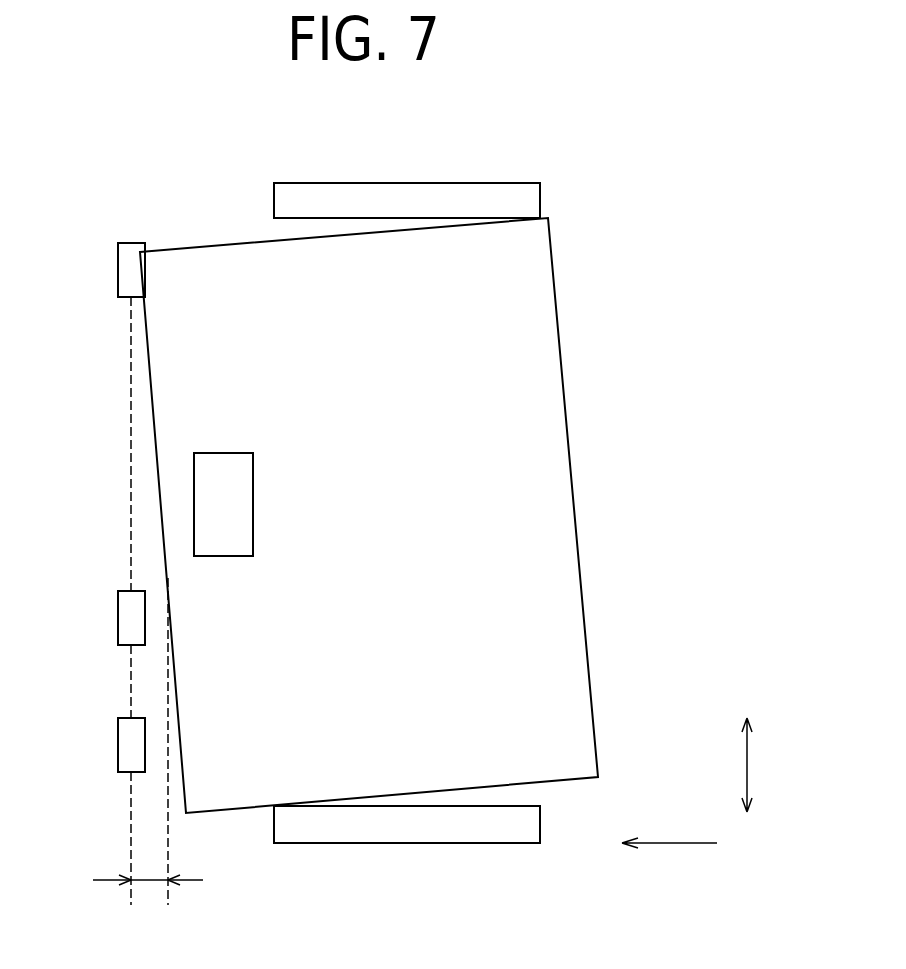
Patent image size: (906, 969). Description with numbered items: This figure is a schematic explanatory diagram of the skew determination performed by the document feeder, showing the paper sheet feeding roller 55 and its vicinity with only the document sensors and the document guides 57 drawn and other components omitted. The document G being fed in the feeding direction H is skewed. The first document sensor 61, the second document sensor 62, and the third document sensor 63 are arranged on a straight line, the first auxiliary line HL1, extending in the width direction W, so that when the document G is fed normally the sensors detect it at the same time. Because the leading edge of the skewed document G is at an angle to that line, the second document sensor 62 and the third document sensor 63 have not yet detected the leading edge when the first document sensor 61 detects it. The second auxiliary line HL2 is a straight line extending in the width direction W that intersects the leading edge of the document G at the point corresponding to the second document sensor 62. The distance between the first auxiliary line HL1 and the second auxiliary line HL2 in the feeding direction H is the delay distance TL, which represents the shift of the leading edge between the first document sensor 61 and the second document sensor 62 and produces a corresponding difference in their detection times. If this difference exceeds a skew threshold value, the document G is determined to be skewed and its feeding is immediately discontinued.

The document G is at (577, 522).
The document guide 57 is at (469, 195).
The paper sheet feeding roller 55 is at (228, 465).
The first document sensor 61 is at (127, 272).
The second document sensor 62 is at (125, 620).
The third document sensor 63 is at (125, 748).
The first auxiliary line HL1 is at (128, 845).
The second auxiliary line HL2 is at (170, 845).
The delay distance TL is at (148, 882).
The width direction W is at (763, 765).
The feeding direction H is at (669, 865).